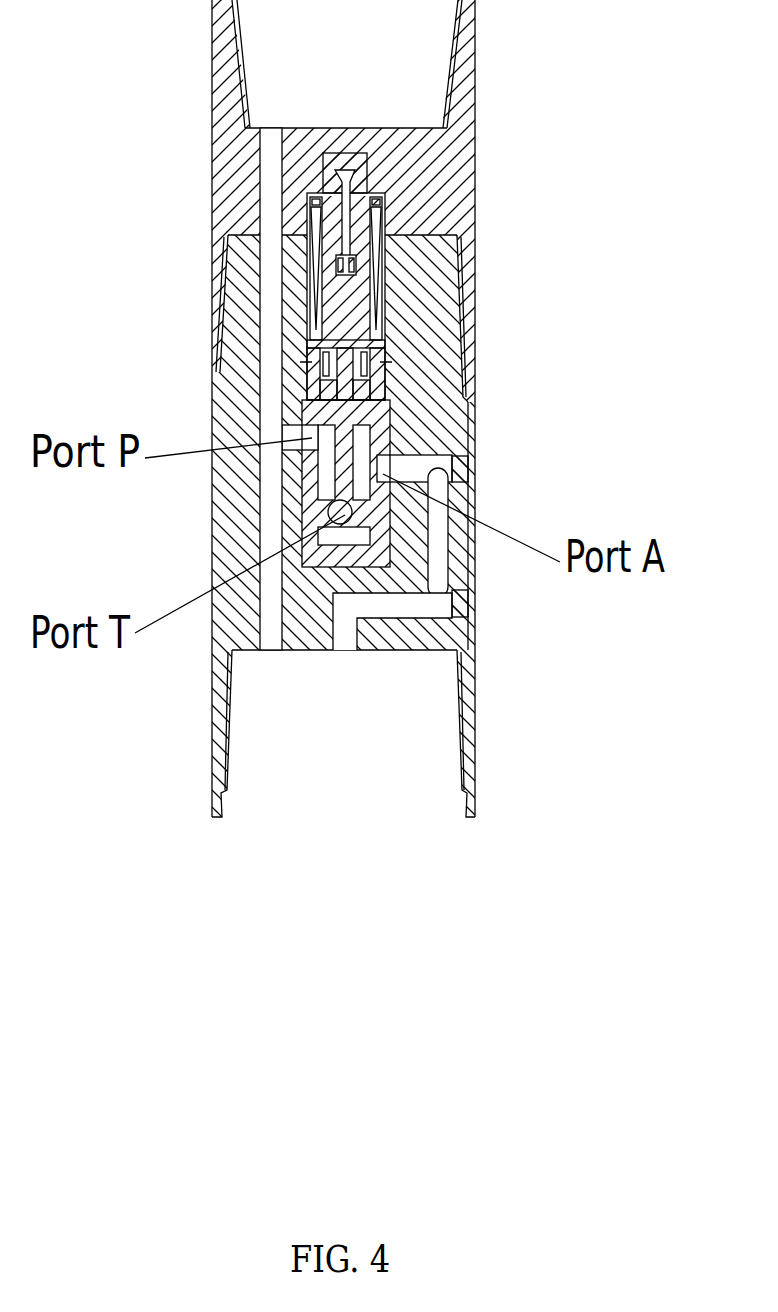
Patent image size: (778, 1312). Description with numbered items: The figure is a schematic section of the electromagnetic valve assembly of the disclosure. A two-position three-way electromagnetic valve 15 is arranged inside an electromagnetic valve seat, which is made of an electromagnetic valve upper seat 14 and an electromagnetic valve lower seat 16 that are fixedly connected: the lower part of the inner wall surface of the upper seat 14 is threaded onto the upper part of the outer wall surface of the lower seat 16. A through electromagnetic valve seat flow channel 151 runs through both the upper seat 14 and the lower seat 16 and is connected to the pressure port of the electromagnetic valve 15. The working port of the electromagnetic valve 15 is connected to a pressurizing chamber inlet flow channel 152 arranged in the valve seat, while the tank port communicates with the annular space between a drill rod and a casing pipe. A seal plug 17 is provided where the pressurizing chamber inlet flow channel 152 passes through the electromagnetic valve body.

The electromagnetic valve upper seat 14 is at (380, 155).
The electromagnetic valve 15 is at (355, 323).
The electromagnetic valve lower seat 16 is at (293, 245).
The seal plug 17 is at (468, 470).
The electromagnetic valve seat flow channel 151 is at (275, 400).
The pressurizing chamber inlet flow channel 152 is at (438, 582).